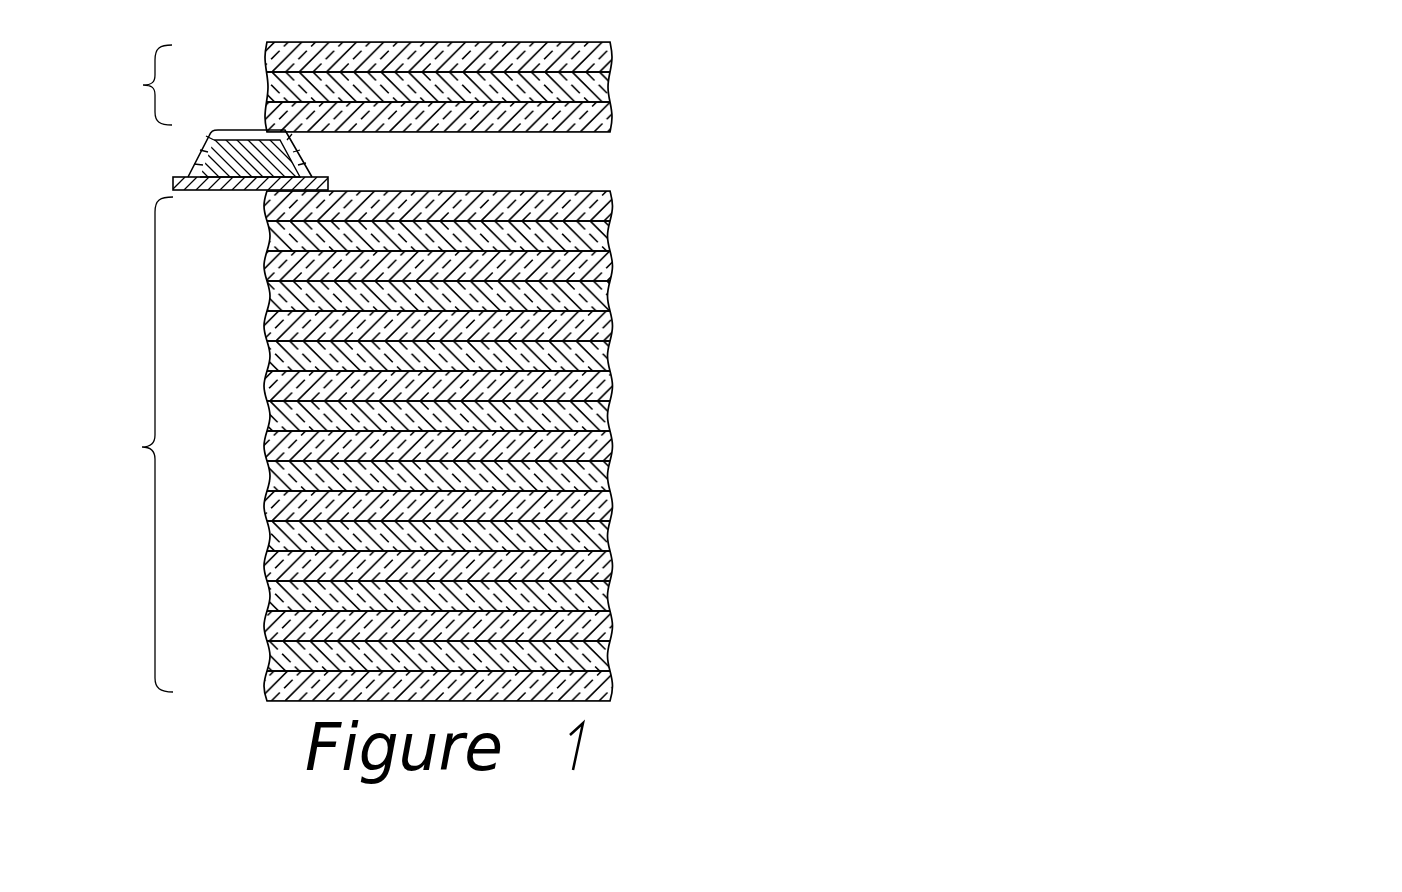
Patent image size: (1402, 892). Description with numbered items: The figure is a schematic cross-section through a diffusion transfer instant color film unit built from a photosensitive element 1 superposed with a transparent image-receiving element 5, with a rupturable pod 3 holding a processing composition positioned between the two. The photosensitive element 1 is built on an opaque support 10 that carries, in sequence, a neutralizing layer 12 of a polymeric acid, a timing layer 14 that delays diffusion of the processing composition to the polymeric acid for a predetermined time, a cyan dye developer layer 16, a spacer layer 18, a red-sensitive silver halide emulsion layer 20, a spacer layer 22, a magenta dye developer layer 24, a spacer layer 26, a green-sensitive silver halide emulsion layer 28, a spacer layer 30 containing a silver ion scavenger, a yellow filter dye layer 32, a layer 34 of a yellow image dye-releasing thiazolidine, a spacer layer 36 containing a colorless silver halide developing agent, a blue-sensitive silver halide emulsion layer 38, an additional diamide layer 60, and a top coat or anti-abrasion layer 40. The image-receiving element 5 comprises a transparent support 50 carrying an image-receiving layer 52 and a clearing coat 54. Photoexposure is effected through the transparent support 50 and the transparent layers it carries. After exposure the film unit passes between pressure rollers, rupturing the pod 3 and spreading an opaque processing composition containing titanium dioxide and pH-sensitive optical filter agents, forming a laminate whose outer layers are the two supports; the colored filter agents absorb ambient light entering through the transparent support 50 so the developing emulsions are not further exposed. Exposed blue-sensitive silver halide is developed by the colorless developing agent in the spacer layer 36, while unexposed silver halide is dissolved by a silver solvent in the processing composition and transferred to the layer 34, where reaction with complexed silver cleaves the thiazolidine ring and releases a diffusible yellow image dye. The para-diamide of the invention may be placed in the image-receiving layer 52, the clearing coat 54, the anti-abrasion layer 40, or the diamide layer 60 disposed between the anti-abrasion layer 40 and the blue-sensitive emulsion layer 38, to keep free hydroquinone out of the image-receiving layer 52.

The photosensitive element 1 is at (761, 446).
The rupturable container or pod 3 is at (179, 167).
The image-receiving element 5 is at (559, 85).
The opaque support 10 is at (640, 690).
The neutralizing layer of a polymeric acid 12 is at (640, 660).
The timing layer 14 is at (640, 630).
The cyan dye developer layer 16 is at (640, 600).
The spacer layer 18 is at (640, 570).
The red-sensitive silver halide emulsion layer 20 is at (640, 540).
The spacer layer 22 is at (640, 510).
The magenta dye developer layer 24 is at (640, 480).
The spacer layer 26 is at (640, 450).
The green-sensitive silver halide emulsion layer 28 is at (640, 420).
The spacer layer containing a silver ion scavenger 30 is at (640, 390).
The yellow filter dye layer 32 is at (640, 360).
The layer of yellow image dye-releasing thiazolidine 34 is at (640, 330).
The spacer layer containing a colorless silver halide developing agent 36 is at (640, 300).
The blue-sensitive silver halide emulsion layer 38 is at (640, 270).
The anti-abrasion layer 40 is at (640, 210).
The transparent support 50 is at (640, 57).
The image-receiving layer 52 is at (640, 88).
The clearing coat 54 is at (640, 118).
The diamide layer 60 is at (640, 240).